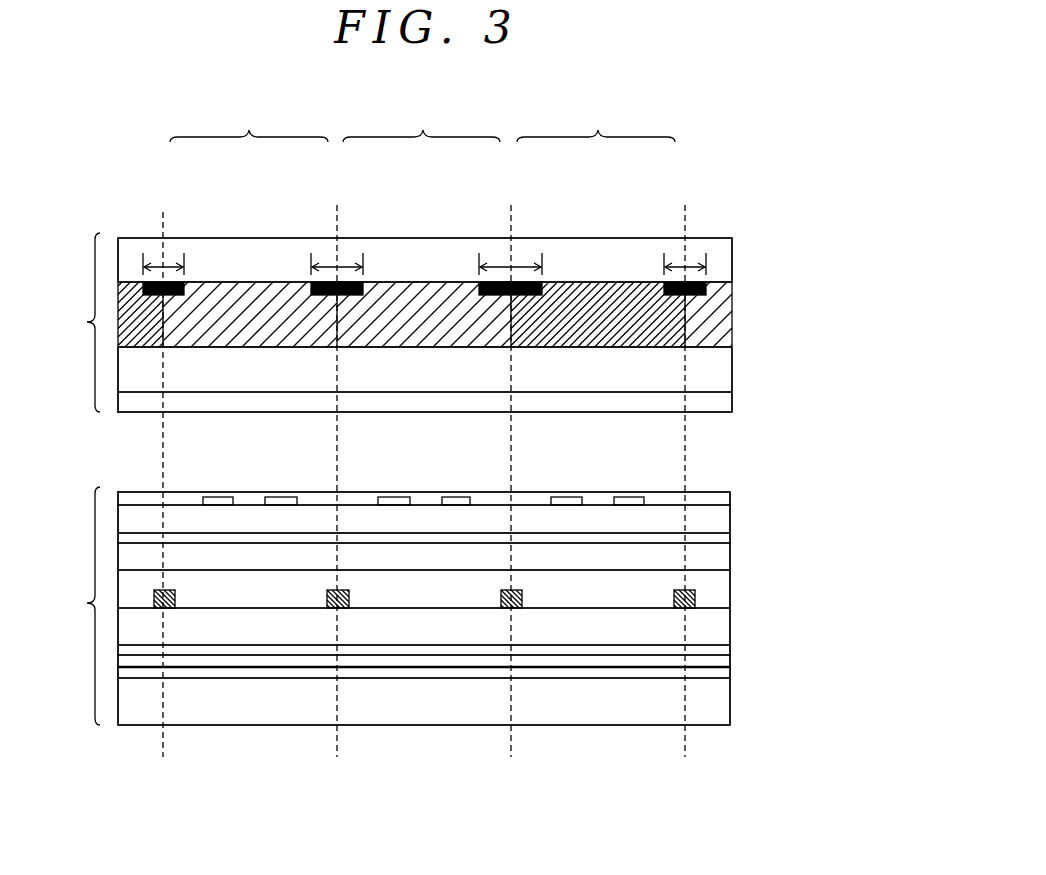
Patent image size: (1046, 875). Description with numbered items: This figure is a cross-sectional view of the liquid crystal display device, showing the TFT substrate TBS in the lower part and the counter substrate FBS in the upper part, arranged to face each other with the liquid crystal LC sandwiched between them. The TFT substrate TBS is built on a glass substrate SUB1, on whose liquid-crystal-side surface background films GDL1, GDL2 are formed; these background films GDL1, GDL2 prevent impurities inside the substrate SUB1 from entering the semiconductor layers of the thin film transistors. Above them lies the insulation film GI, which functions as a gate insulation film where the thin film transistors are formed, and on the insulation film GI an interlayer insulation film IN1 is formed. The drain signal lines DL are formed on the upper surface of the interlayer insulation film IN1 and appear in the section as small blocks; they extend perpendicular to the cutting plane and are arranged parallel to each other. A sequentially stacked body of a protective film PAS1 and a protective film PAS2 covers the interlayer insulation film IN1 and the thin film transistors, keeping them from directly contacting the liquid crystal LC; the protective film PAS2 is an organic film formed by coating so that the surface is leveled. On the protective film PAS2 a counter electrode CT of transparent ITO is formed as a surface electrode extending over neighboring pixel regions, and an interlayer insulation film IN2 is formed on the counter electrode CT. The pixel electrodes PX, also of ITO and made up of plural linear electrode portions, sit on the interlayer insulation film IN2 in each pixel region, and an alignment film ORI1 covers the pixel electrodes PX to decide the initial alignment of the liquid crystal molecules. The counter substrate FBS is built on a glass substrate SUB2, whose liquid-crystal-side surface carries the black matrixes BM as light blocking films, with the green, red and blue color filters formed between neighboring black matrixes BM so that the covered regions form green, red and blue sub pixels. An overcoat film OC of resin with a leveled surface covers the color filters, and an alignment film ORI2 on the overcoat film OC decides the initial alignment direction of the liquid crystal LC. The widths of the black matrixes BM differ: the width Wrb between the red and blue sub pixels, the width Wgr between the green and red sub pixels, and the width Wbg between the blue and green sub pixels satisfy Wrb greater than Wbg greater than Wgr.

The counter substrate FBS is at (384, 322).
The TFT substrate TBS is at (382, 606).
The substrate SUB2 is at (723, 258).
The substrate SUB1 is at (291, 703).
The black matrix BM is at (321, 291).
The overcoat film OC is at (718, 363).
The alignment film ORI2 is at (722, 403).
The alignment film ORI1 is at (183, 497).
The width of black matrix between blue and green sub pixels Wbg is at (152, 263).
The width of black matrix between green and red sub pixels Wgr is at (343, 267).
The width of black matrix between red and blue sub pixels Wrb is at (516, 267).
The liquid crystal LC is at (188, 452).
The pixel electrode PX is at (397, 500).
The interlayer insulation film IN2 is at (722, 520).
The counter electrode CT is at (722, 538).
The protective film PAS2 is at (718, 562).
The protective film PAS1 is at (718, 595).
The interlayer insulation film IN1 is at (718, 627).
The insulation film GI is at (392, 650).
The background film GDL2 is at (722, 661).
The background film GDL1 is at (722, 672).
The drain signal line DL is at (173, 610).